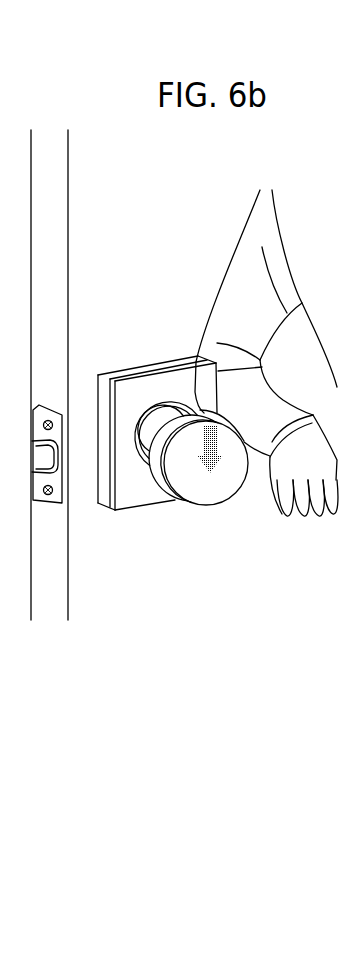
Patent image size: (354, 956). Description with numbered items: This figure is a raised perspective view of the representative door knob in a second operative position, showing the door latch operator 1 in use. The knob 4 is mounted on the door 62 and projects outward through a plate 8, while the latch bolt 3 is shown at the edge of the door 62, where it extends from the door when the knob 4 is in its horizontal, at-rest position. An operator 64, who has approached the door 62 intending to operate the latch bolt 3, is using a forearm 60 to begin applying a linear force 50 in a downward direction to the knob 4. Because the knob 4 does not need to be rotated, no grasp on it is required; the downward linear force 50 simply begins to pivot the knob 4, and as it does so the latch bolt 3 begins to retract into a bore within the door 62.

The door latch operator 1 is at (203, 534).
The latch bolt 3 is at (33, 507).
The knob 4 is at (183, 487).
The rose plate 8 is at (128, 397).
The linear force 50 is at (224, 450).
The forearm 60 is at (216, 345).
The door 62 is at (57, 248).
The operator 64 is at (302, 235).